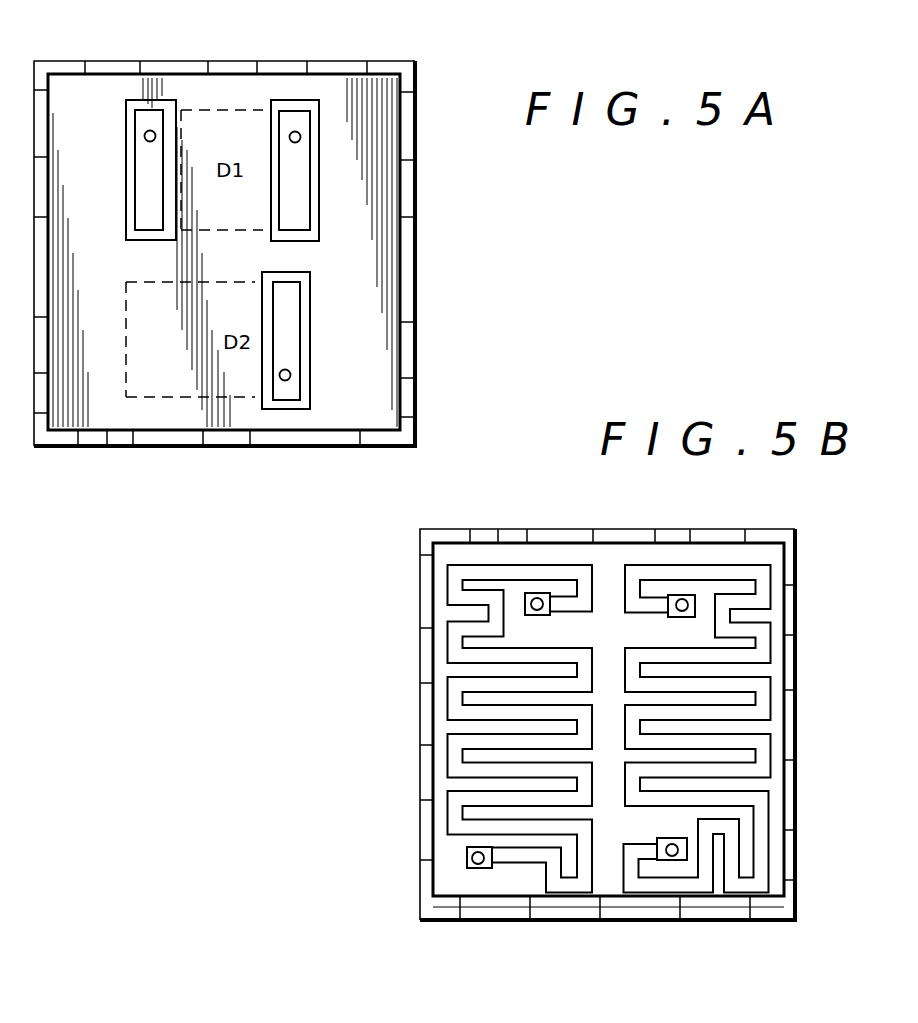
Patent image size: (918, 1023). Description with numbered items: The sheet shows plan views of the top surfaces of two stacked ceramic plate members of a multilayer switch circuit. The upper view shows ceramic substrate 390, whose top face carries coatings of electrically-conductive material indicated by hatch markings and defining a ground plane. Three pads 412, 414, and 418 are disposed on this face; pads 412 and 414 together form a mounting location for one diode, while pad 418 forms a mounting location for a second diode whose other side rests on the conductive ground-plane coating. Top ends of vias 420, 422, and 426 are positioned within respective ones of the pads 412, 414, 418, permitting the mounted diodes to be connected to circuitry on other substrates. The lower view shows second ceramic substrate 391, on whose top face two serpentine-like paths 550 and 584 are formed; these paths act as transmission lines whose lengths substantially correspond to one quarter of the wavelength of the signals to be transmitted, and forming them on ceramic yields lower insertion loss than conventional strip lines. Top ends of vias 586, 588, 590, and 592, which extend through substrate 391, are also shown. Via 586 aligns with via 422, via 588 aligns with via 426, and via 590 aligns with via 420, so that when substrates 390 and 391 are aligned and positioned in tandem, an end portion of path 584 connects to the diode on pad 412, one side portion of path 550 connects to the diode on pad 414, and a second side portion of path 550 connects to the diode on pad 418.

In FIG. 5A, the ceramic substrate 390 is at (497, 56).
In FIG. 5A, the pad 412 is at (155, 122).
In FIG. 5A, the pad 414 is at (298, 165).
In FIG. 5A, the pad 418 is at (288, 315).
In FIG. 5A, the via 420 is at (146, 132).
In FIG. 5A, the via 422 is at (297, 131).
In FIG. 5A, the via 426 is at (287, 382).
In FIG. 5B, the second ceramic substrate 391 is at (387, 774).
In FIG. 5B, the serpentine-like path 550 is at (763, 591).
In FIG. 5B, the serpentine-like path 584 is at (523, 573).
In FIG. 5B, the via 586 is at (683, 600).
In FIG. 5B, the via 588 is at (672, 862).
In FIG. 5B, the via 590 is at (530, 601).
In FIG. 5B, the via 592 is at (467, 860).